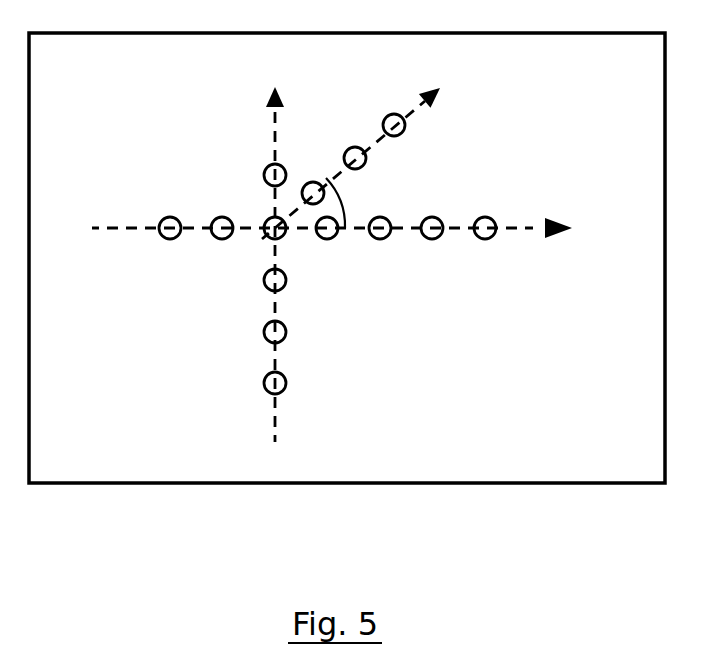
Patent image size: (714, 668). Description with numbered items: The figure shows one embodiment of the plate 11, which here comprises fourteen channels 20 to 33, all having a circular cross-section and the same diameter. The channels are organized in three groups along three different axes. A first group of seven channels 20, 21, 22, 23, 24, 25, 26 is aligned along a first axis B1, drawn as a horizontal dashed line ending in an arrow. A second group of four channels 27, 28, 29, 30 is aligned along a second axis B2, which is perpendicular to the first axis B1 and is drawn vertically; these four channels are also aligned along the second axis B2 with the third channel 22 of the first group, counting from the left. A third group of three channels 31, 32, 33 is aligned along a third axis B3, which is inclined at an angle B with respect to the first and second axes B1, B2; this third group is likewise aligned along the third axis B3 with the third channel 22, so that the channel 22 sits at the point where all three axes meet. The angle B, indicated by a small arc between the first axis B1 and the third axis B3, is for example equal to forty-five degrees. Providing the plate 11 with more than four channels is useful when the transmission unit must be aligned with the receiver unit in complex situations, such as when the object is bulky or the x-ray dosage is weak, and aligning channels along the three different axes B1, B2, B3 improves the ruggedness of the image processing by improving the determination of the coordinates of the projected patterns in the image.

The plate 11 is at (540, 483).
The channel 20 is at (169, 240).
The channel 21 is at (221, 240).
The third channel of the first group 22 is at (270, 218).
The channel 23 is at (327, 240).
The channel 24 is at (380, 240).
The channel 25 is at (430, 240).
The channel 26 is at (485, 240).
The channel 27 is at (266, 167).
The channel 28 is at (264, 280).
The channel 29 is at (264, 332).
The channel 30 is at (279, 393).
The channel 31 is at (311, 181).
The channel 32 is at (347, 150).
The channel 33 is at (402, 133).
The angle B is at (340, 192).
The first axis B1 is at (532, 228).
The second axis B2 is at (272, 137).
The third axis B3 is at (372, 152).